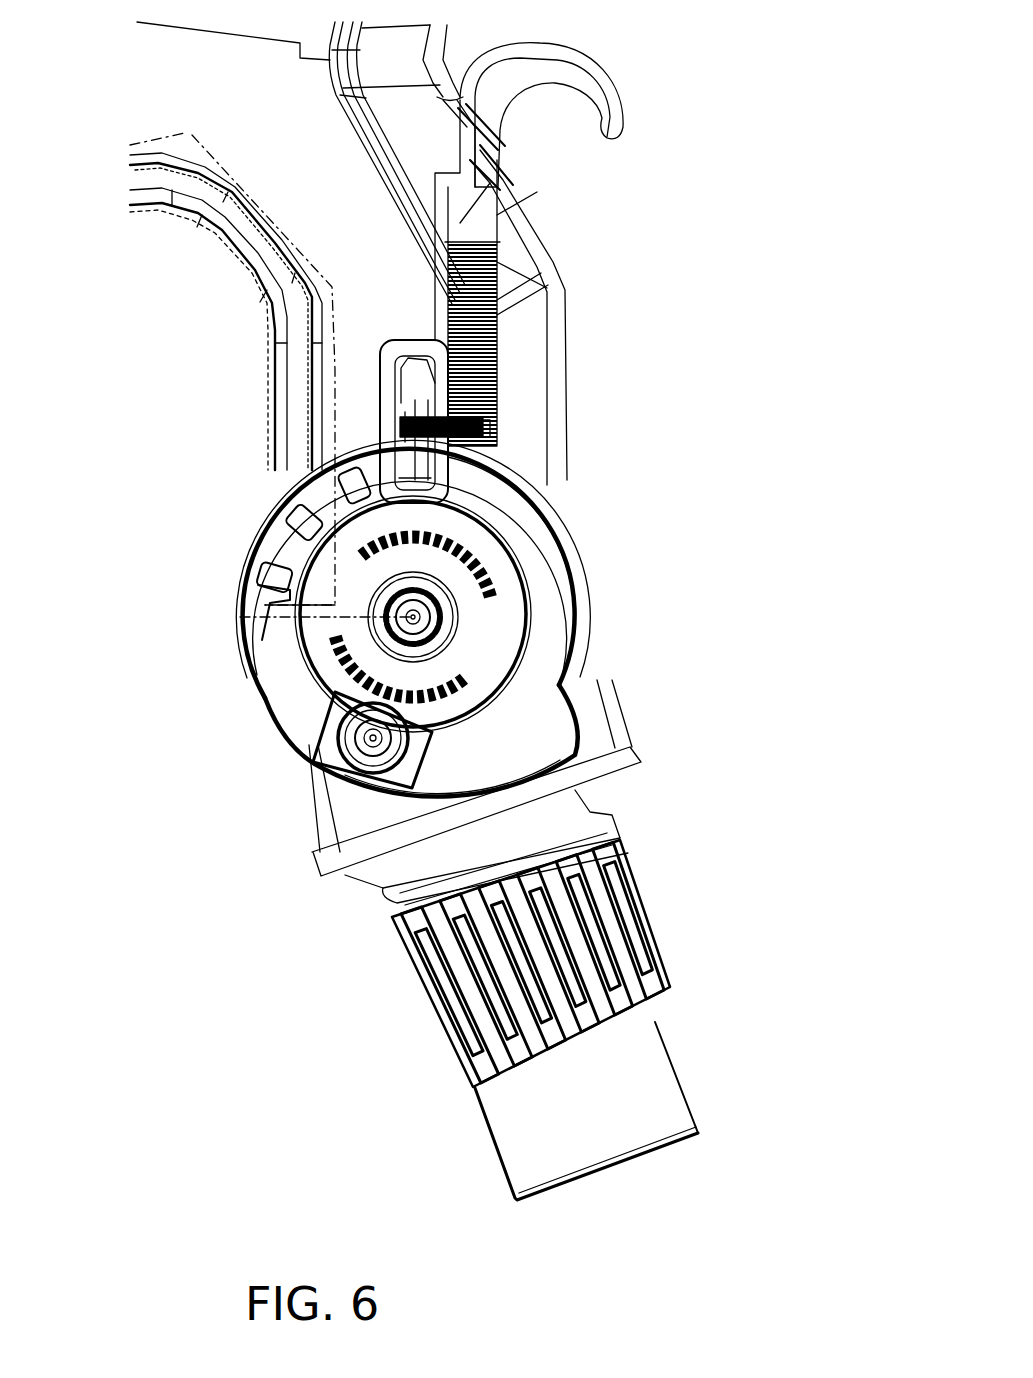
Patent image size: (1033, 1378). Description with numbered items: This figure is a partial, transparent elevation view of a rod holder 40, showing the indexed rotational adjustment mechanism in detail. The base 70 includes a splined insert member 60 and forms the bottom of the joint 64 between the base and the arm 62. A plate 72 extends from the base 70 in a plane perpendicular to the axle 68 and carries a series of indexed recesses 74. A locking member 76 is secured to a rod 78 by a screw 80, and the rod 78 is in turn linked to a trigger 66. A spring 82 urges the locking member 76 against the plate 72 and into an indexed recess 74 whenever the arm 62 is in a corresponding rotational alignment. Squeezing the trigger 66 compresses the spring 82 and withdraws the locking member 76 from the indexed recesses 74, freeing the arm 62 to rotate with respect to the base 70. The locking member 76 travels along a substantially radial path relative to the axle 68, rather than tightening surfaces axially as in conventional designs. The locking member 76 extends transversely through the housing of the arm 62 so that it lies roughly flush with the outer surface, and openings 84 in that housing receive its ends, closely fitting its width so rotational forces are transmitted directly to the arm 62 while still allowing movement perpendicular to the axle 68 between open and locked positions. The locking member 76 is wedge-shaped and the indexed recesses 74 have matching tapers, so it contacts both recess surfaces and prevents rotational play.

The rod holder 40 is at (215, 975).
The splined insert member 60 is at (650, 923).
The arm 62 is at (228, 278).
The joint 64 is at (262, 637).
The trigger 66 is at (600, 62).
The axle 68 is at (413, 617).
The base 70 is at (313, 795).
The plate 72 is at (543, 570).
The indexed recesses 74 is at (262, 562).
The locking member 76 is at (425, 452).
The rod 78 is at (500, 338).
The screw 80 is at (405, 428).
The spring 82 is at (500, 277).
The openings 84 is at (457, 480).